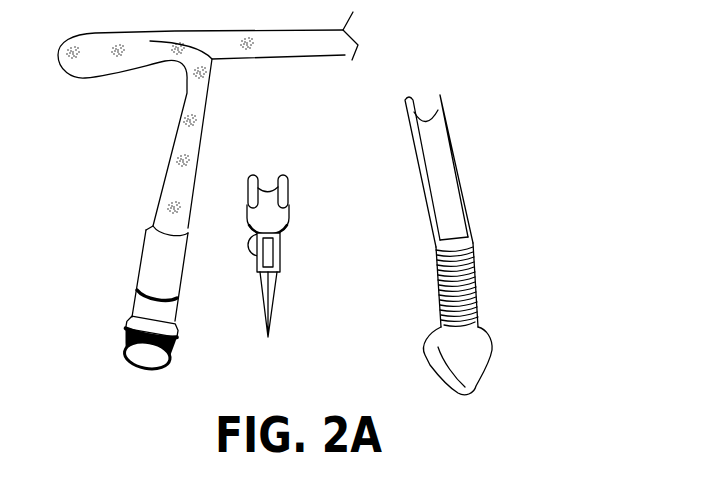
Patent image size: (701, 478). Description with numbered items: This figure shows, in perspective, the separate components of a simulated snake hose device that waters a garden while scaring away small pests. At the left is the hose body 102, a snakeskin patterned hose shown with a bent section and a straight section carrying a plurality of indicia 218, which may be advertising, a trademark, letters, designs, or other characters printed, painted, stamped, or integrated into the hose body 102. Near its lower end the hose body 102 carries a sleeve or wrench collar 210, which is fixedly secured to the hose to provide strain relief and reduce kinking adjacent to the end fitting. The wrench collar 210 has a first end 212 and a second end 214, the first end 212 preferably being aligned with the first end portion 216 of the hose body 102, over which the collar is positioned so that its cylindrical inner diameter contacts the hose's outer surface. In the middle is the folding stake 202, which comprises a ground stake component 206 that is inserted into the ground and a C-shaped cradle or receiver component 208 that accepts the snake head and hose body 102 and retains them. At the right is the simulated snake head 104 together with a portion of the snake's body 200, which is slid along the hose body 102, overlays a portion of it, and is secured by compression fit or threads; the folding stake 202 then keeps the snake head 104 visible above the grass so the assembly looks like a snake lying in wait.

The hose body 102 is at (193, 99).
The indicia 218 is at (307, 57).
The second end 214 is at (153, 228).
The wrench collar 210 is at (158, 258).
The first end 212 is at (137, 295).
The first end portion 216 is at (180, 323).
The folding stake 202 is at (310, 220).
The receiver component 208 is at (268, 198).
The ground stake component 206 is at (272, 307).
The snake body portion 200 is at (448, 210).
The simulated snake head 104 is at (473, 347).